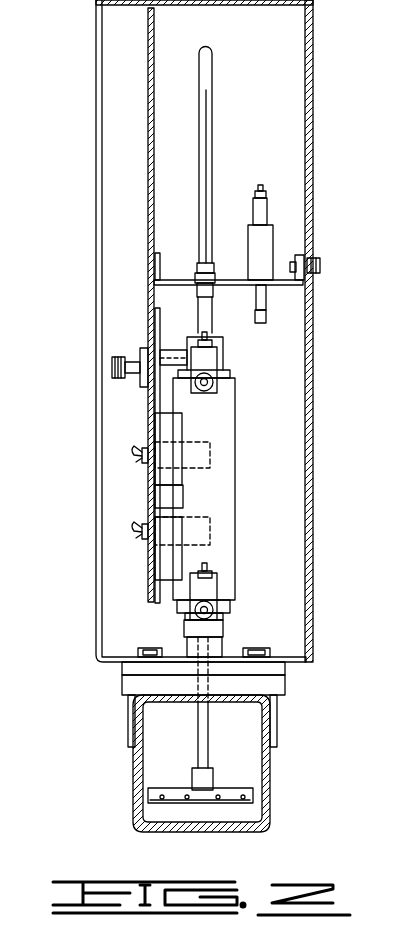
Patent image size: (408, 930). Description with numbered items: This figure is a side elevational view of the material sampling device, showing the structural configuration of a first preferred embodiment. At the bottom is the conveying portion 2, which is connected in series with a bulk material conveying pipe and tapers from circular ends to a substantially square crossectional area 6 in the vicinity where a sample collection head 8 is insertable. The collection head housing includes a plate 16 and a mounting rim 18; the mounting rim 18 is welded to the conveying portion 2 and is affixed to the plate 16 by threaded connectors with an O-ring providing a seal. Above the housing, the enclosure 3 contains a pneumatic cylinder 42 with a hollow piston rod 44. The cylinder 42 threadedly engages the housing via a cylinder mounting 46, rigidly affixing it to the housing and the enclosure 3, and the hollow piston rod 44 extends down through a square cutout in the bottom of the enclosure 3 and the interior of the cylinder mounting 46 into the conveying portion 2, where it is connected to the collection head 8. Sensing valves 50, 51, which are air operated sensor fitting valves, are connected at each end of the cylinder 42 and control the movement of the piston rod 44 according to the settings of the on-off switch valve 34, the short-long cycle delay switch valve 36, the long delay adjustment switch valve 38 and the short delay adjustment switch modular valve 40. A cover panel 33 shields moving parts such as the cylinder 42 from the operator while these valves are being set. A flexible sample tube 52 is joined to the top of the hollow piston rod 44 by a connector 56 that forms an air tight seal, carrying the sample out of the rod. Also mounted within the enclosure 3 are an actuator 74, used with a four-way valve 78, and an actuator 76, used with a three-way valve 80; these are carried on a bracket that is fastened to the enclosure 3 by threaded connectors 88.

The conveying portion 2 is at (270, 775).
The enclosure 3 is at (313, 50).
The substantially square crossectional area 6 is at (172, 755).
The sample collection head 8 is at (225, 788).
The plate 16 is at (285, 668).
The mounting rim 18 is at (285, 688).
The cover panel 33 is at (148, 77).
The on-off switch valve 34 is at (140, 537).
The short-long cycle delay switch valve 36 is at (140, 462).
The long delay adjustment switch valve 38 is at (110, 373).
The short delay adjustment switch modular valve 40 is at (140, 350).
The pneumatic cylinder 42 is at (232, 478).
The hollow piston rod 44 is at (203, 720).
The cylinder mounting 46 is at (185, 633).
The sensing valve 50 is at (223, 356).
The sensing valve 51 is at (217, 590).
The flexible sample tube 52 is at (212, 110).
The connector 56 is at (195, 277).
The actuator 74 is at (262, 212).
The actuator 76 is at (266, 318).
The four-way valve 78 is at (268, 246).
The three-way valve 80 is at (300, 292).
The threaded connectors 88 is at (322, 263).